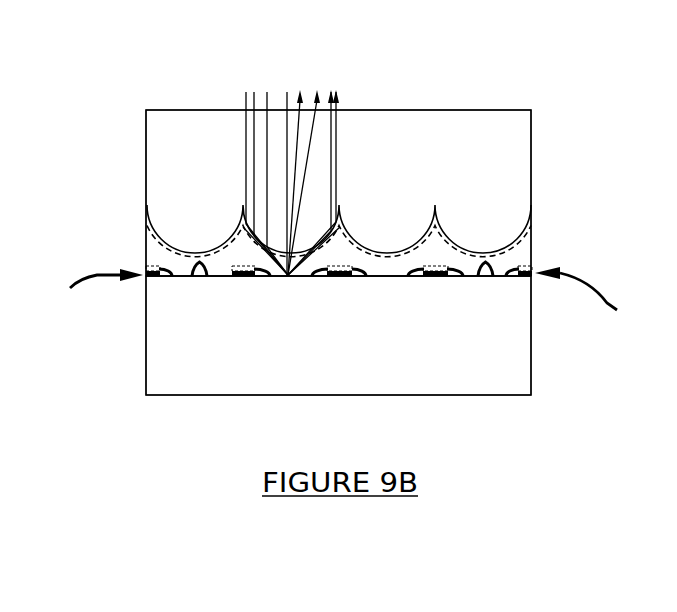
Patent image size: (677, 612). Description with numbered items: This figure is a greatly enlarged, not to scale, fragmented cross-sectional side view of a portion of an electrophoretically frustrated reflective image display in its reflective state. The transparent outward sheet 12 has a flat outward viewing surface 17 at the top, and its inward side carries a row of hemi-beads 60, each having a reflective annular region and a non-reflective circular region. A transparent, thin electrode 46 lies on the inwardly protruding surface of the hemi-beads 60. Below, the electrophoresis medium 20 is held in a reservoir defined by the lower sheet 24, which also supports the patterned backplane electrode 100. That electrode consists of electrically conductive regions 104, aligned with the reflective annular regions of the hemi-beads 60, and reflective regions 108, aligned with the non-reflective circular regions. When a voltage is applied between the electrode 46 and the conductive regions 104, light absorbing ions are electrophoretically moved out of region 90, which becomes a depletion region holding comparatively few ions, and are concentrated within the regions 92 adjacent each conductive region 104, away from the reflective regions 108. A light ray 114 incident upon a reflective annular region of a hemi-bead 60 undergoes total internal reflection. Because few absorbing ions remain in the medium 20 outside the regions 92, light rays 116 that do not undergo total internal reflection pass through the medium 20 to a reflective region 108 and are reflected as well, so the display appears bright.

The transparent outward sheet 12 is at (146, 127).
The outward viewing surface 17 is at (173, 110).
The lower sheet 24 is at (532, 342).
The electrophoresis medium 20 is at (172, 263).
The hemi-bead 60 is at (210, 240).
The depletion region 90 is at (175, 253).
The electrode 46 is at (158, 253).
The electrically conductive region 104 is at (165, 277).
The region adjacent electrically conductive region 92 is at (170, 277).
The reflective region 108 is at (198, 277).
The patterned backplane electrode 100 is at (350, 300).
The light ray 114 is at (246, 107).
The light rays 116 is at (254, 91).